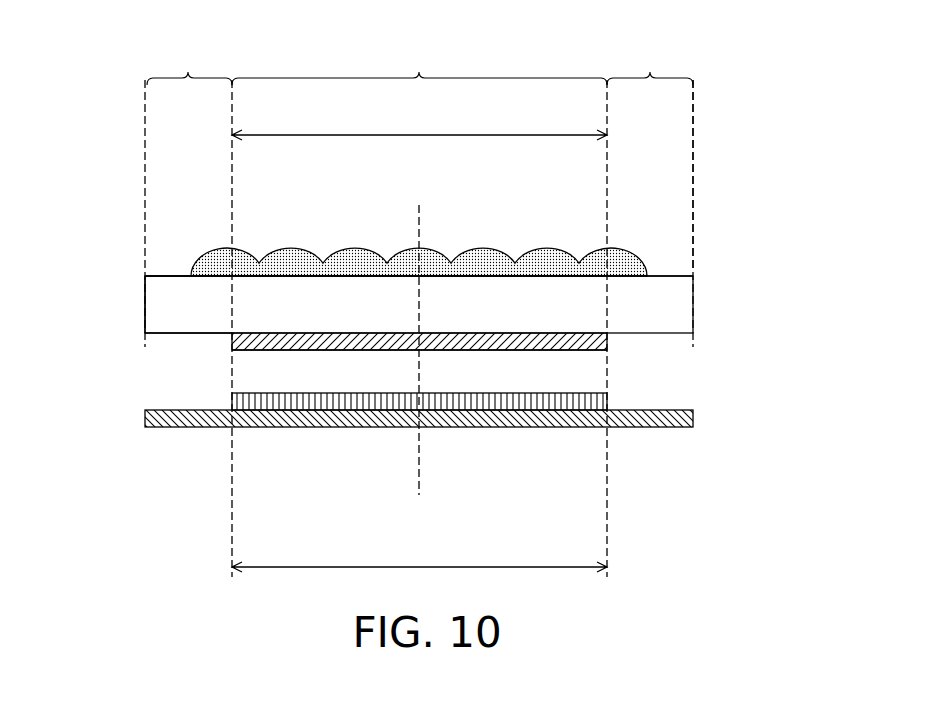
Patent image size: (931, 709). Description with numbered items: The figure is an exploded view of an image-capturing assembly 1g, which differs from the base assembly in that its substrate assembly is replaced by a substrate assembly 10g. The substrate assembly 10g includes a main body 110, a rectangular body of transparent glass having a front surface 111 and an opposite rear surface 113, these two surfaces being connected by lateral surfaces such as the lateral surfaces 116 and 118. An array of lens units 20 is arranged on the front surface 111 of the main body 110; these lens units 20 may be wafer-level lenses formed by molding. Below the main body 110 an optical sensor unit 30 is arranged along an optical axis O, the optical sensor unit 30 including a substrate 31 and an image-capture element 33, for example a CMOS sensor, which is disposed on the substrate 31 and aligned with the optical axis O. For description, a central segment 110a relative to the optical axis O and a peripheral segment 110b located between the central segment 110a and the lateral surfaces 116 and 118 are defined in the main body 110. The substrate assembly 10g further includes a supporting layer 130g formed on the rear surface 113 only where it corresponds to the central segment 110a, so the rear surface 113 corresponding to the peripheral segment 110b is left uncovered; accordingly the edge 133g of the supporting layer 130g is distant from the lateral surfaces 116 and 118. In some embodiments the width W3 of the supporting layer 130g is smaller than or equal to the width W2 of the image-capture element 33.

The peripheral segment 110b is at (420, 59).
The central segment 110a is at (419, 59).
The width of the supporting layer W3 is at (419, 121).
The width of the image-capture element W2 is at (419, 554).
The optical axis O is at (417, 331).
The main body 110 is at (682, 315).
The lateral surface 118 is at (693, 285).
The front surface 111 is at (170, 275).
The lateral surface 116 is at (145, 305).
The rear surface 113 is at (168, 333).
The lens units 20 is at (594, 252).
The supporting layer 130g is at (607, 346).
The edge of the supporting layer 133g is at (234, 337).
The optical sensor unit 30 is at (463, 447).
The substrate 31 is at (352, 427).
The image-capture element 33 is at (292, 411).
The image-capturing assembly 1g is at (705, 197).
The substrate assembly 10g is at (712, 264).